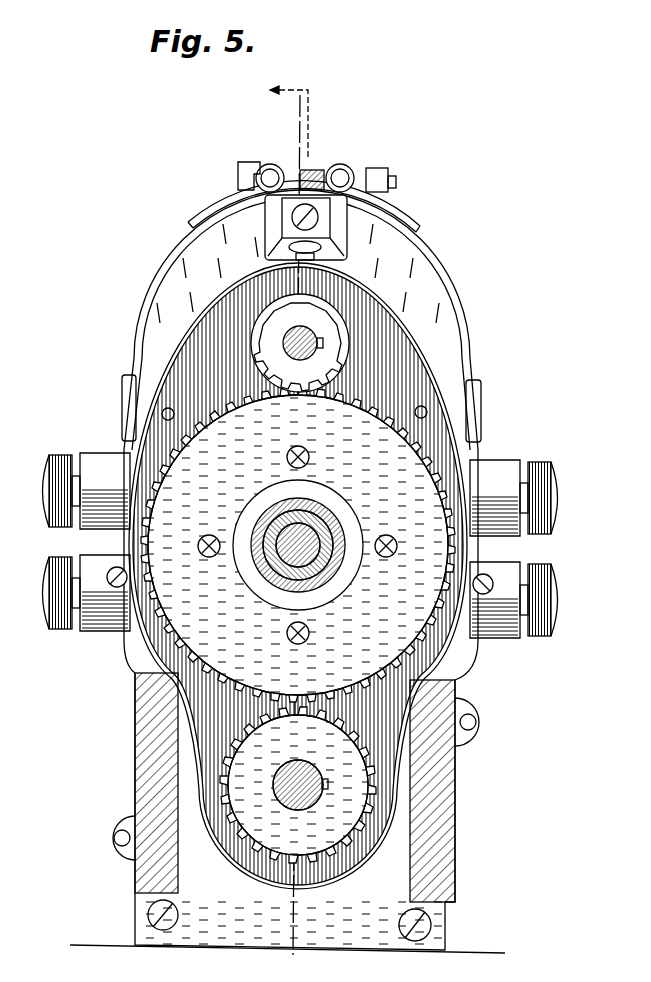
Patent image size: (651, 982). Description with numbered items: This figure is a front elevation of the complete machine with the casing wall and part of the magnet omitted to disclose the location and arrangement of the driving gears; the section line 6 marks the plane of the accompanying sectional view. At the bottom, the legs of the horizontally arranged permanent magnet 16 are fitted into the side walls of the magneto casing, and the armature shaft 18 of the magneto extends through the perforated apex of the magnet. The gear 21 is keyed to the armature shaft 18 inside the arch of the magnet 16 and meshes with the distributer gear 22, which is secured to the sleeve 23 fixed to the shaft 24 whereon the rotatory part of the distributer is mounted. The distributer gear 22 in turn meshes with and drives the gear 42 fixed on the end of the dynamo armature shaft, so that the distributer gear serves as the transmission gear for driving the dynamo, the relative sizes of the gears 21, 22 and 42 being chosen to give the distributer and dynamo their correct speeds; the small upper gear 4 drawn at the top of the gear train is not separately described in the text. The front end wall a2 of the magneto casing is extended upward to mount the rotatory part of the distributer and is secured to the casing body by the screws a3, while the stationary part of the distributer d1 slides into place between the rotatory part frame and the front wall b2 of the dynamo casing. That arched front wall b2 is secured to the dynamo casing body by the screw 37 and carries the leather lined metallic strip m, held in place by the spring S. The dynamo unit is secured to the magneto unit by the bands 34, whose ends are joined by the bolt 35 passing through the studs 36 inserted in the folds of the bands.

The section line 6 is at (297, 114).
The bolt 35 is at (252, 162).
The studs 36 is at (272, 172).
The spring S is at (314, 172).
The bands 34 is at (240, 200).
The screw 37 is at (318, 217).
The leather lined metallic strip m is at (434, 246).
The front wall b2 is at (298, 573).
The gear 42 is at (304, 339).
The small gear 4 is at (300, 343).
The distributer gear 22 is at (298, 545).
The sleeve 23 is at (330, 530).
The shaft 24 is at (285, 578).
The front end wall a2 is at (466, 418).
The stationary part of the distributer d1 is at (300, 545).
The permanent magnet 16 is at (134, 770).
The gear 21 is at (298, 785).
The armature shaft 18 is at (303, 788).
The screws a3 is at (179, 915).